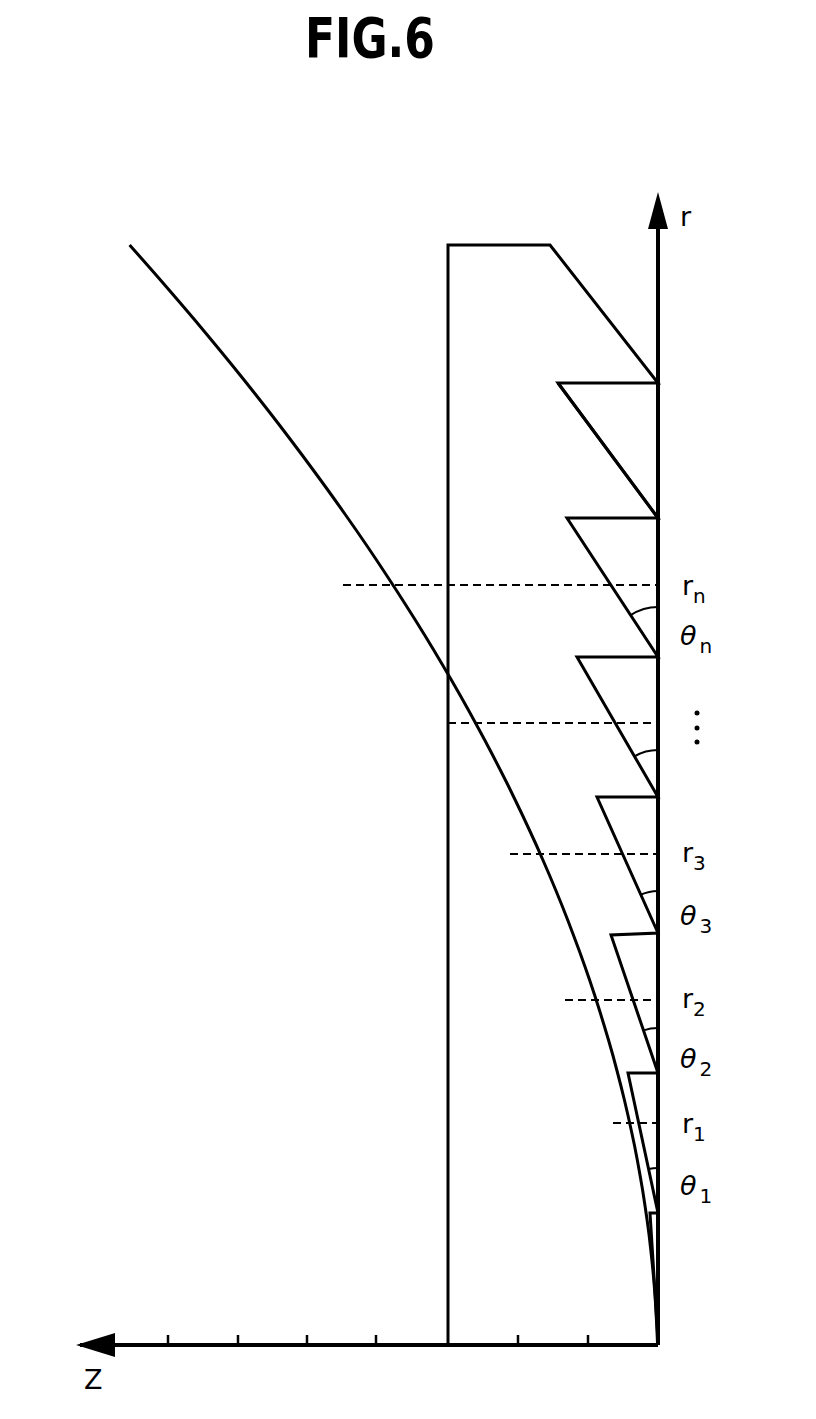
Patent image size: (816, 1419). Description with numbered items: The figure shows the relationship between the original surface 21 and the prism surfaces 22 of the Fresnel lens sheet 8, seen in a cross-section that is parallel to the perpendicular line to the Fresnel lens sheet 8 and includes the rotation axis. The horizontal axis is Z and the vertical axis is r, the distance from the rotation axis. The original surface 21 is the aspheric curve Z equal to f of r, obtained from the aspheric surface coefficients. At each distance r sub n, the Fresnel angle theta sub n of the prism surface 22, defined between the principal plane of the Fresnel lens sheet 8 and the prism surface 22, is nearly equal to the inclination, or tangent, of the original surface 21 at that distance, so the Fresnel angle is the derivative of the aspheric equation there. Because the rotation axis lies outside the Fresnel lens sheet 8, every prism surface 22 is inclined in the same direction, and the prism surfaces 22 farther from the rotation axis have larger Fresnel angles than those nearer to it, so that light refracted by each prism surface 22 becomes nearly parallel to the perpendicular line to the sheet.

The Fresnel lens sheet 8 is at (575, 335).
The original surface 21 is at (340, 510).
The prism surface 22 is at (620, 465).